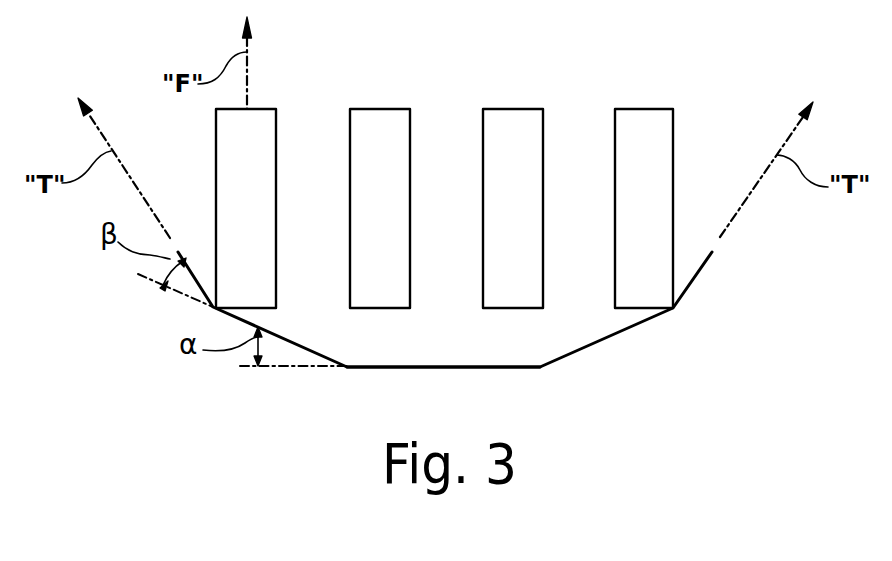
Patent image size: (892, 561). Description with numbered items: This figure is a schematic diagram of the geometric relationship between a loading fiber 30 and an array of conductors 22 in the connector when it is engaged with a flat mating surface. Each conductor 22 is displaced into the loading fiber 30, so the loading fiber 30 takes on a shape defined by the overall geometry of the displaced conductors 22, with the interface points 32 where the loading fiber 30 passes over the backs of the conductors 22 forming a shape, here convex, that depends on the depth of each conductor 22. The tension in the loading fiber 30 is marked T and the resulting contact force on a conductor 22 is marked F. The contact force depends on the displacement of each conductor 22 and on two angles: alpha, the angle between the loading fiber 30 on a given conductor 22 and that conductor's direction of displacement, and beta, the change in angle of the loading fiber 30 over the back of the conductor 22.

The conductor 22 is at (264, 192).
The loading fiber 30 is at (607, 338).
The interface point 32 is at (381, 368).